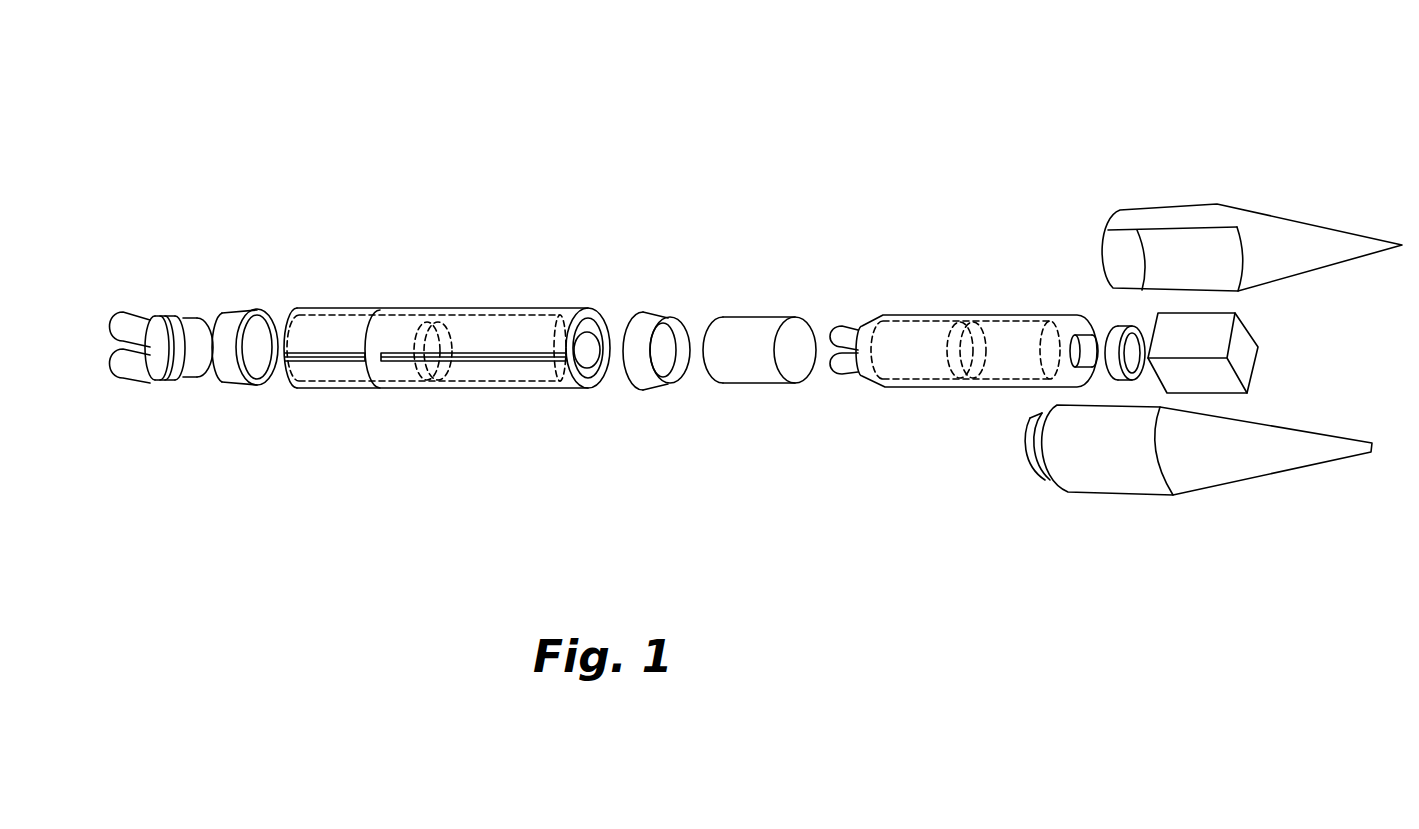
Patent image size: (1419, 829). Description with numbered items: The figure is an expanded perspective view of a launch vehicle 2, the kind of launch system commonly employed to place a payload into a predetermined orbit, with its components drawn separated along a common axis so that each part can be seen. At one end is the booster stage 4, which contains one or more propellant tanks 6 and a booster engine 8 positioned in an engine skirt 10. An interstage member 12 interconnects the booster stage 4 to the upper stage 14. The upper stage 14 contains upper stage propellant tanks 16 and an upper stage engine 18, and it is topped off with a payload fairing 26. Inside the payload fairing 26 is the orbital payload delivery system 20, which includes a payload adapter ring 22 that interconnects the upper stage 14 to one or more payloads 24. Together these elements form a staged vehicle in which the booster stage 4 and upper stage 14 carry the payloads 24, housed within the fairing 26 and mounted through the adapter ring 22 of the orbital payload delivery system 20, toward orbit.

The launch vehicle 2 is at (582, 132).
The booster stage 4 is at (567, 292).
The propellant tanks 6 is at (342, 373).
The booster engine 8 is at (165, 382).
The engine skirt 10 is at (238, 383).
The interstage member 12 is at (817, 302).
The upper stage 14 is at (1107, 203).
The upper stage propellant tanks 16 is at (920, 332).
The upper stage engine 18 is at (857, 376).
The orbital payload delivery system (OPADS) 20 is at (1092, 392).
The payload adapter ring 22 is at (1106, 327).
The payloads 24 is at (1240, 365).
The payload fairing 26 is at (1307, 258).